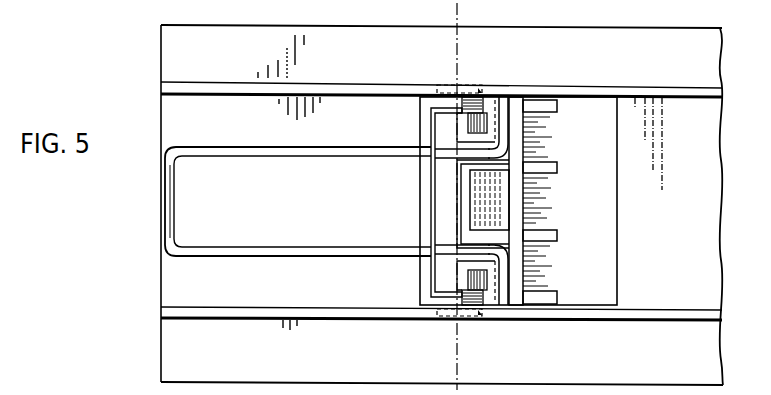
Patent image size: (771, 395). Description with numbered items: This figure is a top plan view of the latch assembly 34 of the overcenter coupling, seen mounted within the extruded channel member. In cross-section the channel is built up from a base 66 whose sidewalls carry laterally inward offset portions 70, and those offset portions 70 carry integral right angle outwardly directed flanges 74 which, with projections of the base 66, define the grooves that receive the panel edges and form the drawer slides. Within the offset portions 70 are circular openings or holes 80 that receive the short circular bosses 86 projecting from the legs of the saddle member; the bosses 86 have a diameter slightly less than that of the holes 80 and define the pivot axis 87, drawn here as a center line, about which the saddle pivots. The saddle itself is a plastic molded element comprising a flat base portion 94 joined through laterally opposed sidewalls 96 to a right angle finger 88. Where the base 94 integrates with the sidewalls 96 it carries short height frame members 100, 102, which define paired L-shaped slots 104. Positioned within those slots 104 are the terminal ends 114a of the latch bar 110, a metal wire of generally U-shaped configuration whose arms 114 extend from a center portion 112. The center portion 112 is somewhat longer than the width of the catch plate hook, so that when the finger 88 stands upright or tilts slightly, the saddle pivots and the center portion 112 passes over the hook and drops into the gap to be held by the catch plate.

The latch assembly 34 is at (631, 168).
The base 66 is at (172, 288).
The laterally inward offset portions 70 is at (228, 68).
The right angle outwardly directed flanges 74 is at (211, 36).
The circular openings or holes 80 is at (480, 85).
The circular bosses 86 is at (444, 86).
The pivot axis 87 is at (460, 358).
The right angle finger 88 is at (426, 211).
The flat base portion 94 is at (607, 258).
The laterally opposed sidewalls 96 is at (455, 104).
The short height frame member 100 is at (519, 278).
The short height frame member 102 is at (460, 268).
The L-shaped slots 104 is at (513, 158).
The latch bar 110 is at (264, 259).
The center portion 112 is at (176, 226).
The arms 114 is at (347, 148).
The terminal ends 114a is at (513, 107).